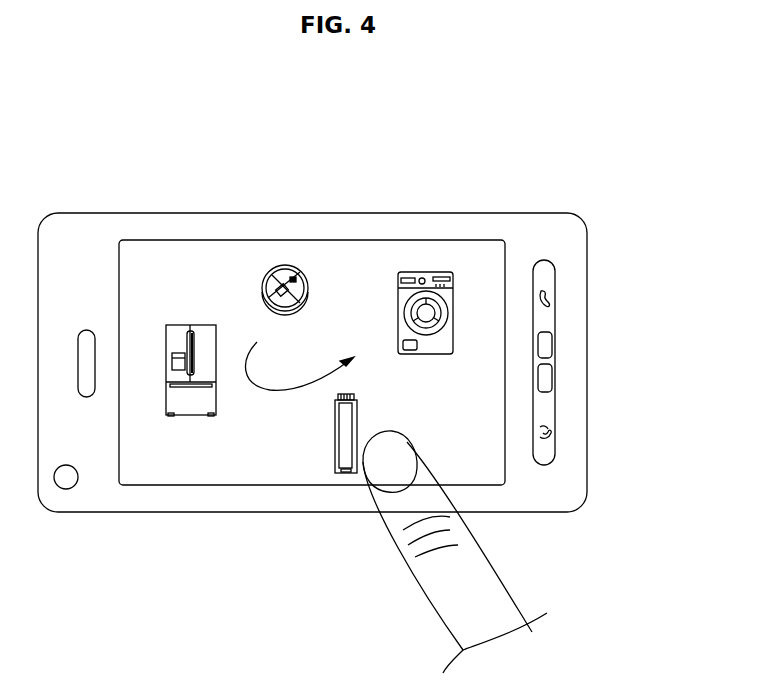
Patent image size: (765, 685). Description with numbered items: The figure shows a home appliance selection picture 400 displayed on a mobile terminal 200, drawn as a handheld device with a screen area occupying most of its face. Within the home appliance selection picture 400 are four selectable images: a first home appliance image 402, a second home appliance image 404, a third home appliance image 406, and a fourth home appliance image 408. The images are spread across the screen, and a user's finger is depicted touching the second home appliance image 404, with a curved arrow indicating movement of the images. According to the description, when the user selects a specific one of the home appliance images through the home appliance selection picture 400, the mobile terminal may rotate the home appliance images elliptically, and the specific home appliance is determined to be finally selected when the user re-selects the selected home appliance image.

The mobile terminal 200 is at (563, 195).
The home appliance selection picture 400 is at (225, 443).
The first home appliance image 402 is at (175, 325).
The second home appliance image 404 is at (346, 473).
The third home appliance image 406 is at (423, 272).
The fourth home appliance image 408 is at (285, 267).